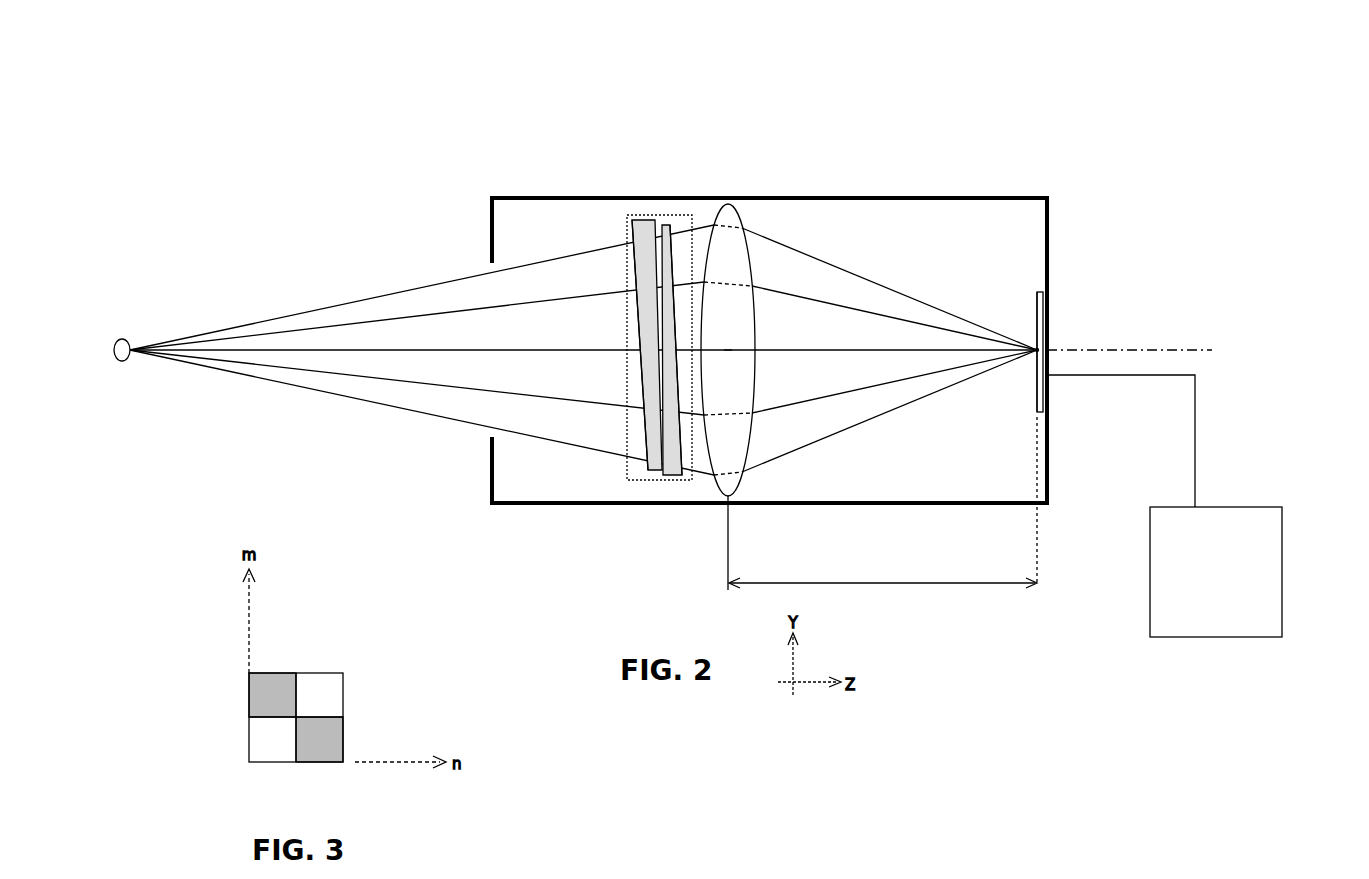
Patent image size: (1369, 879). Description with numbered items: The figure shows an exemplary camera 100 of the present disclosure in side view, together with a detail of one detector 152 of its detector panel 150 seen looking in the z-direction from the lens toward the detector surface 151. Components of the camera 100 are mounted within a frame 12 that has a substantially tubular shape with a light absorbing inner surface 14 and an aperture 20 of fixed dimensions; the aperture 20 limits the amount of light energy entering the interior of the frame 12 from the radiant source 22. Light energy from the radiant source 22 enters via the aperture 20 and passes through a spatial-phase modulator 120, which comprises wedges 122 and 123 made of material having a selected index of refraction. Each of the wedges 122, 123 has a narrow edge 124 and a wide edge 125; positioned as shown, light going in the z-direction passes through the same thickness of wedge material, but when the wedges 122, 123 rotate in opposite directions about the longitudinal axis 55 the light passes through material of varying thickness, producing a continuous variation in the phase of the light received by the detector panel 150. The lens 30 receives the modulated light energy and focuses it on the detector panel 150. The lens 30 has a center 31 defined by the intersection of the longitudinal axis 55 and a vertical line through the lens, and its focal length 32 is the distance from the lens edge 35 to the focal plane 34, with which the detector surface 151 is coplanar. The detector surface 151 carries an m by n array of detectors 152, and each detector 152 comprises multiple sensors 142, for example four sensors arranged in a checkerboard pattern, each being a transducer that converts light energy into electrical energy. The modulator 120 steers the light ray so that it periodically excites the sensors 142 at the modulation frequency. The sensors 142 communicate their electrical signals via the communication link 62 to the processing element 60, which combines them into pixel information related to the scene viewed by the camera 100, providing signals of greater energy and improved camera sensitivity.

In FIG. 2, the camera 100 is at (708, 275).
In FIG. 2, the frame 12 is at (850, 198).
In FIG. 2, the aperture 20 is at (475, 268).
In FIG. 2, the radiant source 22 is at (128, 338).
In FIG. 2, the spatial-phase modulator 120 is at (624, 342).
In FIG. 2, the wedge 122 is at (647, 435).
In FIG. 2, the wedge 123 is at (675, 442).
In FIG. 2, the narrow edge 124 is at (644, 222).
In FIG. 2, the wide edge 125 is at (666, 224).
In FIG. 2, the lens 30 is at (729, 200).
In FIG. 2, the center 31 is at (730, 350).
In FIG. 2, the lens edge 35 is at (733, 493).
In FIG. 2, the focal length 32 is at (883, 574).
In FIG. 2, the focal plane 34 is at (1038, 535).
In FIG. 2, the detector panel 150 is at (1046, 292).
In FIG. 2, the detector surface 151 is at (1033, 386).
In FIG. 2, the detector 152 is at (1036, 343).
In FIG. 3, the detector 152 is at (291, 740).
In FIG. 2, the longitudinal axis 55 is at (1158, 350).
In FIG. 2, the communication link 62 is at (1197, 467).
In FIG. 2, the processing element 60 is at (1216, 572).
In FIG. 2, the light absorbing inner surface 14 is at (843, 502).
In FIG. 3, the sensors 142 is at (252, 733).